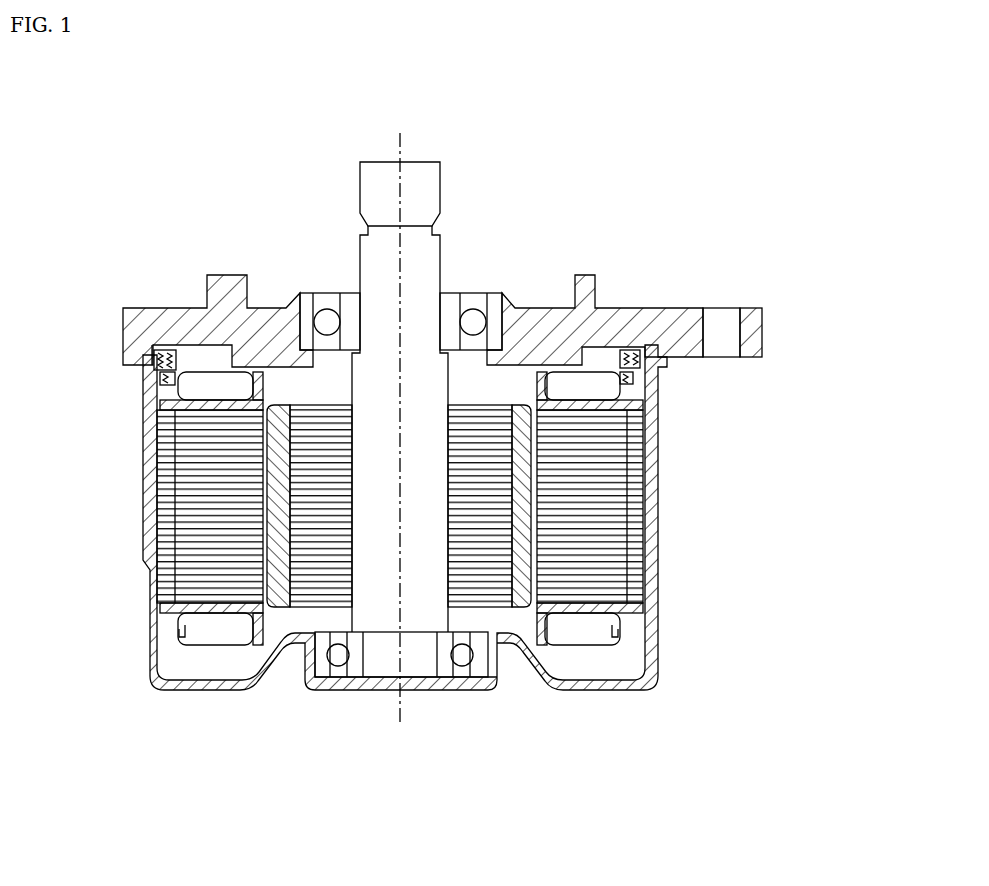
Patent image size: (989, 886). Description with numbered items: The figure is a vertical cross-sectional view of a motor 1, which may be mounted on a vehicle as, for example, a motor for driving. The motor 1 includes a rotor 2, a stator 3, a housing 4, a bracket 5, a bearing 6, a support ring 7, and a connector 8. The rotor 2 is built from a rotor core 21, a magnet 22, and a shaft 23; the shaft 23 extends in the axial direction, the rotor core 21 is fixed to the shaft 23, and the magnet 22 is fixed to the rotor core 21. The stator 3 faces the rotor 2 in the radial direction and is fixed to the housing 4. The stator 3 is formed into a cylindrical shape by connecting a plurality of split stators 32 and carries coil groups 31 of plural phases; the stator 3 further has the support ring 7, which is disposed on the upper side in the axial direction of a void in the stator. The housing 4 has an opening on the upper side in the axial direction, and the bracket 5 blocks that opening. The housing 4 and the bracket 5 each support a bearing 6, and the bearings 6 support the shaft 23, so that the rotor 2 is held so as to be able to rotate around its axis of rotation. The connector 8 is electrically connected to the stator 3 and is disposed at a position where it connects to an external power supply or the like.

The motor 1 is at (198, 148).
The rotor 2 is at (484, 397).
The rotor core 21 is at (487, 424).
The magnet 22 is at (520, 583).
The shaft 23 is at (422, 201).
The stator 3 is at (602, 357).
The coil groups 31 is at (590, 392).
The split stators 32 is at (617, 480).
The housing 4 is at (650, 538).
The bracket 5 is at (747, 327).
The bearing 6 is at (338, 302).
The support ring 7 is at (152, 347).
The connector 8 is at (154, 362).